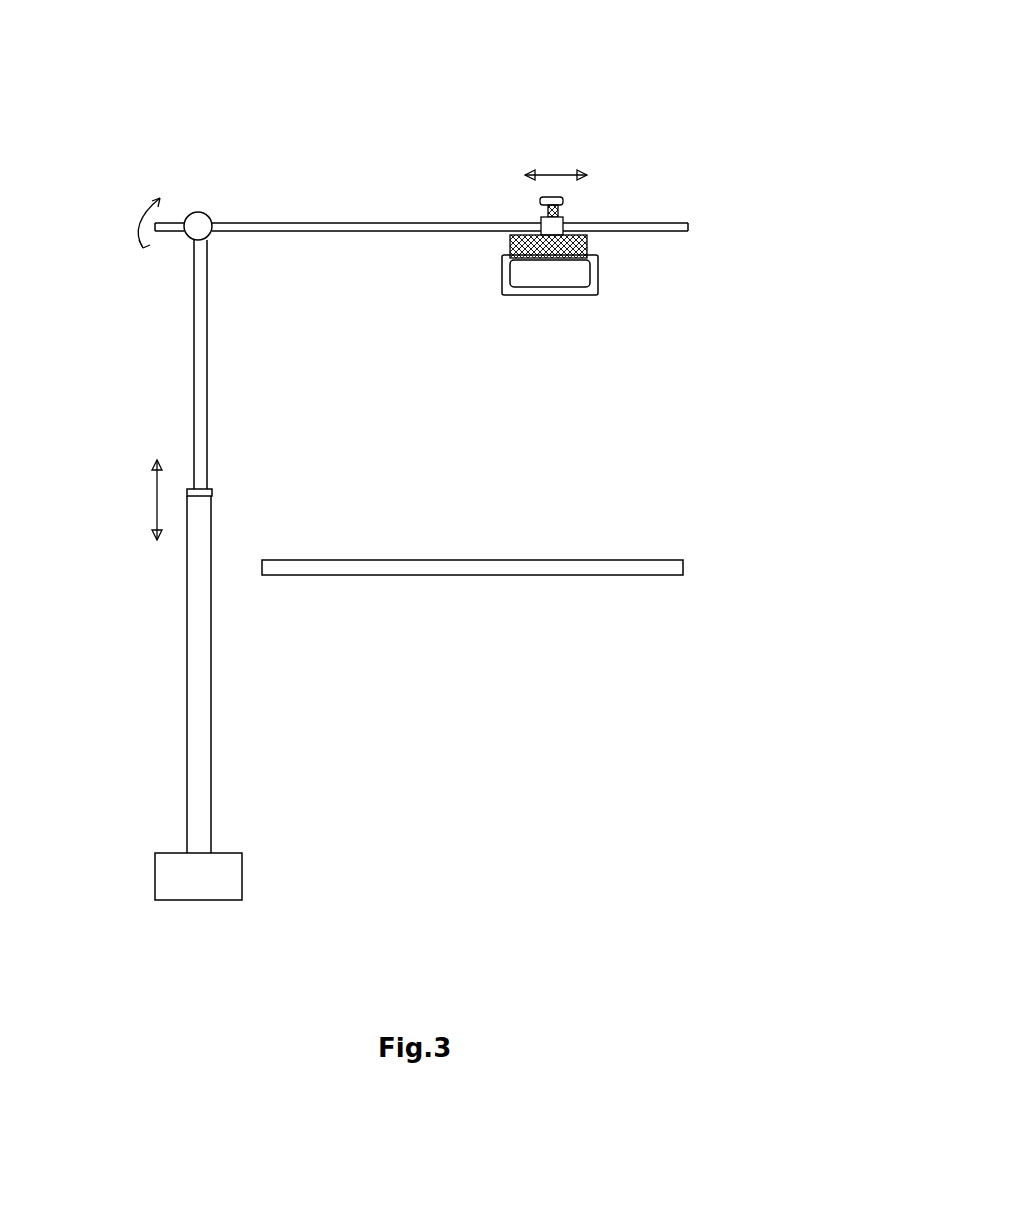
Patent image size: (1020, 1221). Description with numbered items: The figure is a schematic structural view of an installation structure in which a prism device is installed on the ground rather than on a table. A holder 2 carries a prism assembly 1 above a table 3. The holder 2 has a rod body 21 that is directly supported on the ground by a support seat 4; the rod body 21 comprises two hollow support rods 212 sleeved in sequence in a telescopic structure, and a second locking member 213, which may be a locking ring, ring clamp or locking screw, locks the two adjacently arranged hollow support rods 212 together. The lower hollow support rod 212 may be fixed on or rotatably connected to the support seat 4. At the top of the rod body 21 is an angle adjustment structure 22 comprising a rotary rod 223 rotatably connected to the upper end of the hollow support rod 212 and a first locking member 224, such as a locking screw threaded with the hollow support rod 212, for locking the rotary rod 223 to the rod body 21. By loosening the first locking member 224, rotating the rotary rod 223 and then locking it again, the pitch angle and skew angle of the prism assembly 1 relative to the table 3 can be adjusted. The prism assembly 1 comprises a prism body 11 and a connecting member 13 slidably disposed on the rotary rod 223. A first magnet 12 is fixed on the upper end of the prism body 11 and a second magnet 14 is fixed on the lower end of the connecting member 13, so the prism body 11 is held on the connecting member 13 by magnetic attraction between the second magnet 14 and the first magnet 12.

The prism assembly 1 is at (551, 285).
The prism body 11 is at (597, 283).
The first magnet 12 is at (588, 248).
The connecting member 13 is at (553, 219).
The second magnet 14 is at (585, 233).
The holder 2 is at (100, 138).
The rod body 21 is at (342, 390).
The hollow support rod 212 is at (203, 410).
The second locking member 213 is at (212, 492).
The angle adjustment structure 22 is at (315, 117).
The rotary rod 223 is at (313, 223).
The first locking member 224 is at (201, 222).
The table 3 is at (618, 568).
The support seat 4 is at (228, 880).